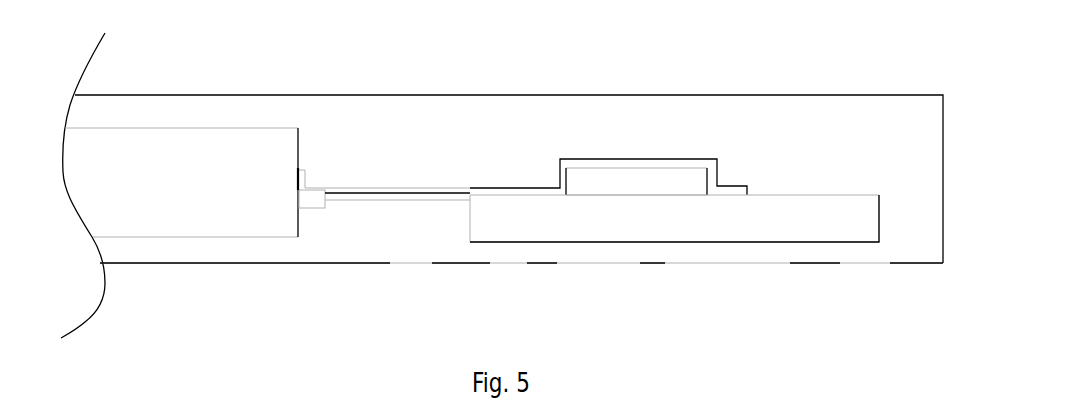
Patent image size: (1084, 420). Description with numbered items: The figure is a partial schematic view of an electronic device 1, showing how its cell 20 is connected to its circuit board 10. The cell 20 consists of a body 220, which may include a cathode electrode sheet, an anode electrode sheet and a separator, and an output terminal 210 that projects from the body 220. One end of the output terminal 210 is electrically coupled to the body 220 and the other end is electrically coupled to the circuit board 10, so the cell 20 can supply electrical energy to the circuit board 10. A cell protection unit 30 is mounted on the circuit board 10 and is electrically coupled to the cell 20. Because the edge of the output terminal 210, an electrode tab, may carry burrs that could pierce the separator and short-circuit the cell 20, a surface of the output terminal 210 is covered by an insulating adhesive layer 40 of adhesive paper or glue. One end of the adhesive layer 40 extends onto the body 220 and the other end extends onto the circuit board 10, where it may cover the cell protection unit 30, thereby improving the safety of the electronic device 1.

The electronic device 1 is at (202, 60).
The circuit board 10 is at (633, 220).
The cell 20 is at (267, 240).
The cell protection unit 30 is at (642, 180).
The adhesive layer 40 is at (445, 187).
The output terminal 210 is at (355, 197).
The body 220 is at (208, 210).